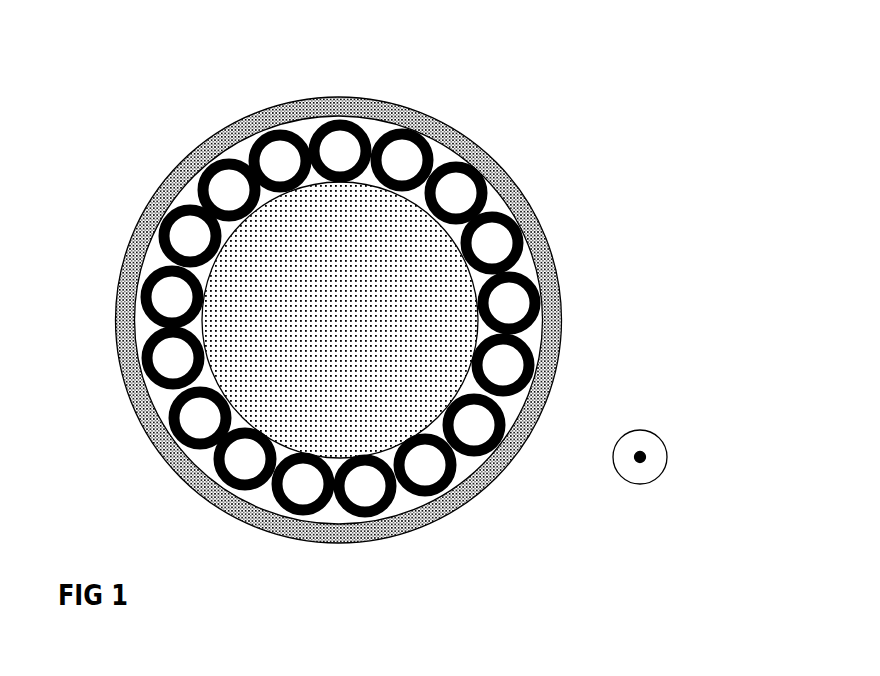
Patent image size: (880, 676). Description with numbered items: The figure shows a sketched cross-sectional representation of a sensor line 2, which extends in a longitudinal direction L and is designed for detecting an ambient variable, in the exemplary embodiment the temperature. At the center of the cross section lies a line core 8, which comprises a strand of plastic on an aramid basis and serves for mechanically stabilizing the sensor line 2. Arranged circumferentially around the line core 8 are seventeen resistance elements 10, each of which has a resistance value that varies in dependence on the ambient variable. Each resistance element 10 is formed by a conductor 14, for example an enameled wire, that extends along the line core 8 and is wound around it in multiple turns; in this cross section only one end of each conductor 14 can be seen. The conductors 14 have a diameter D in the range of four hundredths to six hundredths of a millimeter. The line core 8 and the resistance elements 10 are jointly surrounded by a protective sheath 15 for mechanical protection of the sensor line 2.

The sensor line 2 is at (383, 278).
The line core 8 is at (372, 311).
The resistance element 10 is at (340, 287).
The conductor 14 is at (402, 153).
The protective sheath 15 is at (492, 483).
The diameter D is at (308, 135).
The longitudinal direction L is at (645, 430).